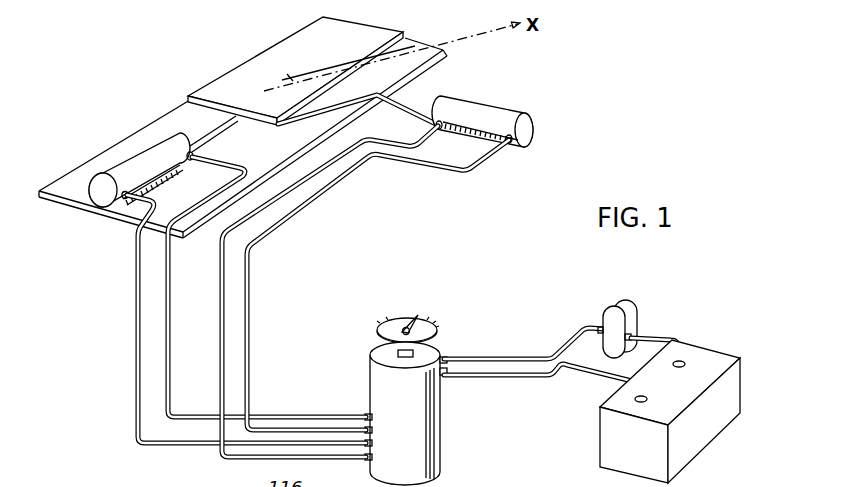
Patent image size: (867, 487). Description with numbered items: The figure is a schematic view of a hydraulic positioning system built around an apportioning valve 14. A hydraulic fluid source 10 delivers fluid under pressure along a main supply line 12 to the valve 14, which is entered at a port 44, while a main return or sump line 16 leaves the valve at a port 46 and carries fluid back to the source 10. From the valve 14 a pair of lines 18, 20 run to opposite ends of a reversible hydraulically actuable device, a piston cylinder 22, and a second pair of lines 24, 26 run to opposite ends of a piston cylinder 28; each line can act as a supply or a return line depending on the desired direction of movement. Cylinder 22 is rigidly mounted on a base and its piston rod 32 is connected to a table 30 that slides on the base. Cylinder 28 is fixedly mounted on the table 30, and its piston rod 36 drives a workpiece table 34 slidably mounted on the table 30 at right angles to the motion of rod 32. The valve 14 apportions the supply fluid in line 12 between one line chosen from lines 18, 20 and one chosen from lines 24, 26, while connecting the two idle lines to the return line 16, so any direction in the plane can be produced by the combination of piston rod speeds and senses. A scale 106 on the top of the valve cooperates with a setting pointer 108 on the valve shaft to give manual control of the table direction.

The hydraulic fluid source 10 is at (697, 357).
The main supply line 12 is at (507, 357).
The apportioning valve 14 is at (437, 430).
The main return or sump line 16 is at (540, 380).
The line 18 is at (247, 360).
The line 20 is at (222, 337).
The piston cylinder 22 is at (483, 112).
The line 24 is at (255, 413).
The line 26 is at (132, 422).
The piston cylinder 28 is at (133, 163).
The table 30 is at (120, 215).
The piston rod 32 is at (420, 102).
The workpiece table 34 is at (253, 67).
The piston rod 36 is at (200, 128).
The port 44 is at (450, 352).
The port 46 is at (450, 380).
The scale 106 is at (423, 332).
The setting pointer 108 is at (405, 328).